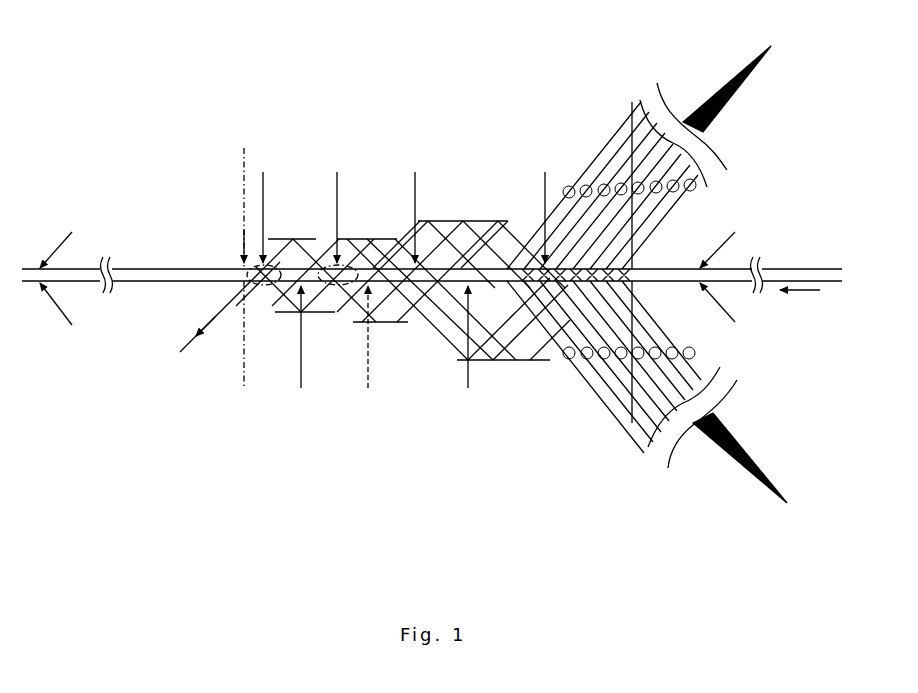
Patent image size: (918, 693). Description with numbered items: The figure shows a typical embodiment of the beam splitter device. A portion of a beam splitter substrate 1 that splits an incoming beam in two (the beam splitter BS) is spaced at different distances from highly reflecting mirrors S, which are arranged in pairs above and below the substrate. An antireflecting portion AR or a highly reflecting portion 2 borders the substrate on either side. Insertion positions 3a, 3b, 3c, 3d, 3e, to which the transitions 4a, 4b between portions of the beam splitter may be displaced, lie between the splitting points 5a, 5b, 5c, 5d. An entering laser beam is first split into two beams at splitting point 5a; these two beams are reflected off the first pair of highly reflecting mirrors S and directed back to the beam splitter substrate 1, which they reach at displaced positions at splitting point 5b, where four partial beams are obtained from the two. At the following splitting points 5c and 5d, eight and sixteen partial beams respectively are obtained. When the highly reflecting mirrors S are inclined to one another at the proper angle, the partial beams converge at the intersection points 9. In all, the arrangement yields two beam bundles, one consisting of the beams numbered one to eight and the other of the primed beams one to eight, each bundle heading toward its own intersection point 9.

The beam splitter substrate 1 is at (363, 236).
The antireflecting or highly reflecting portion 2 is at (138, 278).
The insertion position 3a is at (246, 347).
The insertion position 3b is at (302, 349).
The insertion position 3c is at (371, 349).
The insertion position 3d is at (469, 349).
The insertion position 3e is at (634, 368).
The transition 4a is at (631, 171).
The transition 4b is at (242, 196).
The splitting point 5a is at (262, 207).
The splitting point 5b is at (336, 207).
The splitting point 5c is at (414, 207).
The splitting point 5d is at (544, 207).
The intersection point 9 is at (659, 278).
The antireflecting portion AR is at (417, 286).
The beam splitter BS is at (274, 262).
The highly reflecting mirror S is at (409, 292).